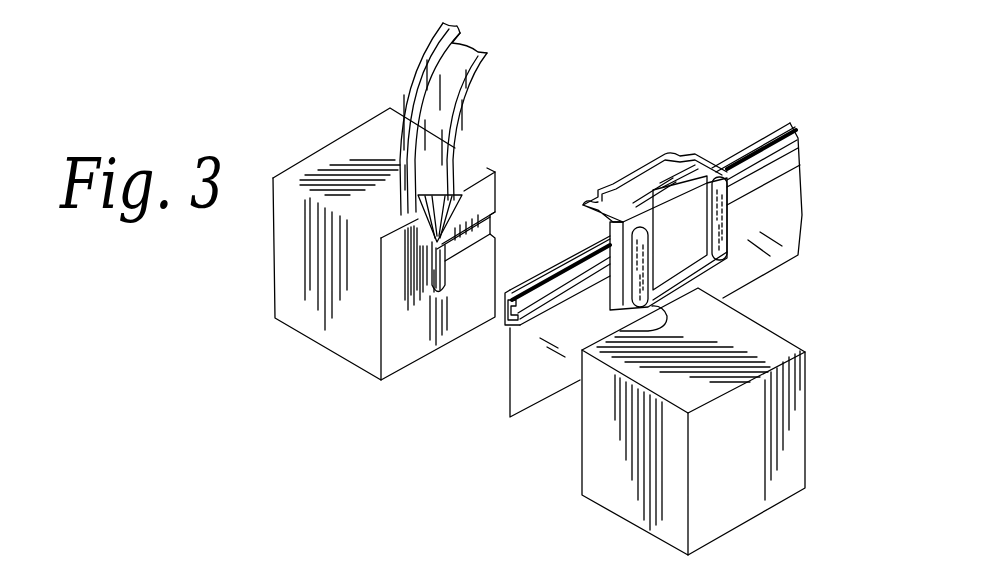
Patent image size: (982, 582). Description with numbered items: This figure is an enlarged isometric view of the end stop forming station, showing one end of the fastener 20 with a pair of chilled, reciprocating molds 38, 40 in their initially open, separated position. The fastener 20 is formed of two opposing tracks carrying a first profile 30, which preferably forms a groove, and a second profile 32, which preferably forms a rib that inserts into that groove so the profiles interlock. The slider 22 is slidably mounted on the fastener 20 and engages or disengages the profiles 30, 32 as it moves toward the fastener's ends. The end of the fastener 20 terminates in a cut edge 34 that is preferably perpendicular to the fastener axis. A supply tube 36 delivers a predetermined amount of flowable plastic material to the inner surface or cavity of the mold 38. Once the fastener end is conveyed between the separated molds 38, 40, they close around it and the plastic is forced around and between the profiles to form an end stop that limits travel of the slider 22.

The fastener 20 is at (667, 171).
The slider 22 is at (637, 185).
The first profile 30 is at (783, 163).
The second profile 32 is at (720, 172).
The cut edge 34 is at (508, 310).
The supply tube 36 is at (458, 112).
The reciprocating mold 38 is at (497, 190).
The reciprocating mold 40 is at (803, 380).